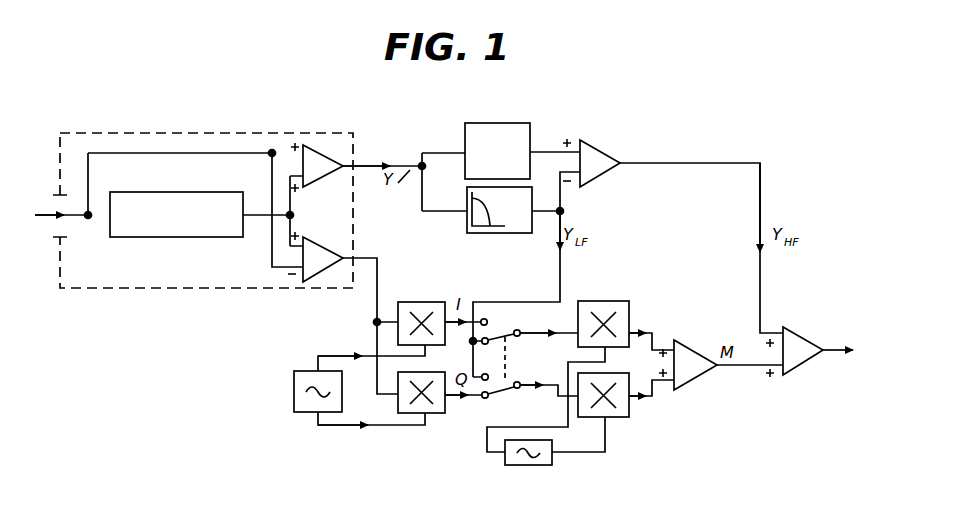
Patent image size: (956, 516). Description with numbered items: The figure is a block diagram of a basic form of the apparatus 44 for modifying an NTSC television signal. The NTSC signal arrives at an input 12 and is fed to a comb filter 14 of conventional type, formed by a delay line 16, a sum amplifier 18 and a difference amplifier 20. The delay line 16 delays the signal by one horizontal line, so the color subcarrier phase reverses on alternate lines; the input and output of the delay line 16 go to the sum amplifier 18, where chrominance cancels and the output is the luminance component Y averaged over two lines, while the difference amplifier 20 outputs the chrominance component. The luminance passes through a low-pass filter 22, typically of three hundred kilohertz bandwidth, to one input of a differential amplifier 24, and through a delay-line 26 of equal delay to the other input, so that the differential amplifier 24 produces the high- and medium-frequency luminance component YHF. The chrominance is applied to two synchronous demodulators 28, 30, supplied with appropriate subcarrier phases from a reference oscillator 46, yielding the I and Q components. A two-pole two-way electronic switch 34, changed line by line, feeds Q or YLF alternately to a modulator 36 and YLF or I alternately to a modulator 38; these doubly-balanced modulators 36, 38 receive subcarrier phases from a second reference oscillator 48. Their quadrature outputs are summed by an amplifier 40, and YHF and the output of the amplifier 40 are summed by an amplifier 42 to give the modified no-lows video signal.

The input 12 is at (49, 217).
The comb filter 14 is at (179, 132).
The delay line 16 is at (127, 238).
The sum amplifier 18 is at (334, 138).
The difference amplifier 20 is at (317, 238).
The low-pass filter 22 is at (489, 234).
The differential amplifier 24 is at (603, 152).
The delay-line 26 is at (504, 124).
The synchronous demodulator 28 is at (412, 302).
The synchronous demodulator 30 is at (428, 414).
The two-pole two-way electronic switch 34 is at (505, 360).
The modulator 36 is at (610, 301).
The modulator 38 is at (622, 418).
The amplifier 40 is at (691, 348).
The amplifier 42 is at (797, 361).
The apparatus 44 is at (388, 157).
The reference oscillator 46 is at (302, 370).
The second reference oscillator 48 is at (534, 466).